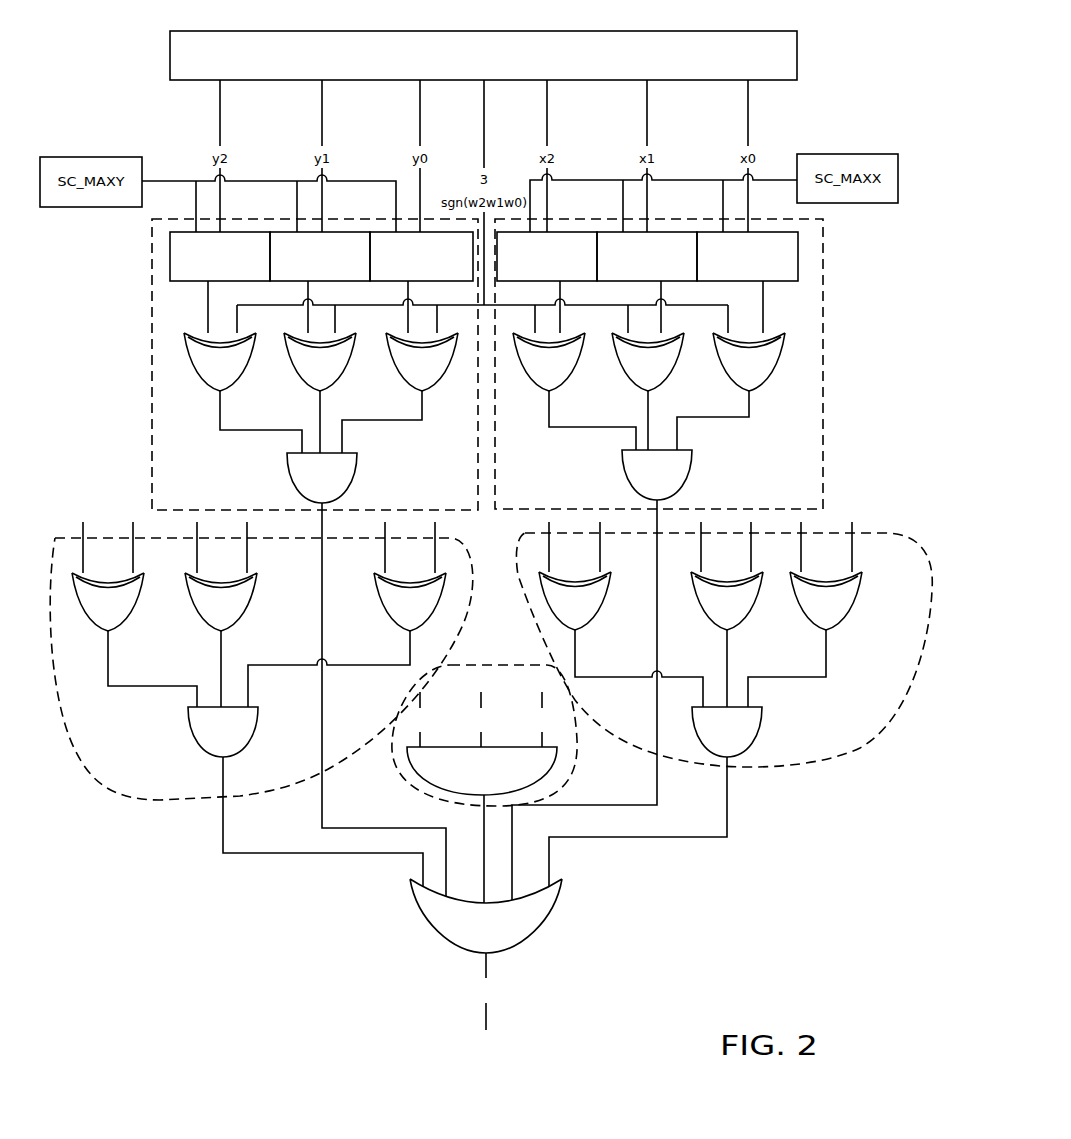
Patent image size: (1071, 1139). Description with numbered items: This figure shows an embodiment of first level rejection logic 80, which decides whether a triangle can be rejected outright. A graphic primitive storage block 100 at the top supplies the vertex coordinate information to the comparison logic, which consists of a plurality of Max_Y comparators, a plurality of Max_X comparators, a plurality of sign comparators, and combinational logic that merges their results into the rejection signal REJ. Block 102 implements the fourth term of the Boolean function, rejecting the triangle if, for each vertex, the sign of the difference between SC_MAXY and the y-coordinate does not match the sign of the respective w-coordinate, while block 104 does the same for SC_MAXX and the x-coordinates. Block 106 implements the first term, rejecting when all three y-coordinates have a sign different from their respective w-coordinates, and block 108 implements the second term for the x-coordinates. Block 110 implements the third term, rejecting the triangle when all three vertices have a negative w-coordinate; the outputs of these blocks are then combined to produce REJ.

The graphic primitive storage block 100 is at (738, 30).
The block implementing the fourth term 102 is at (152, 330).
The block implementing the fifth term 104 is at (823, 321).
The block implementing the first term 106 is at (55, 538).
The block implementing the second term 108 is at (878, 533).
The block implementing the third term 110 is at (481, 666).
The first level rejection logic 80 is at (812, 977).